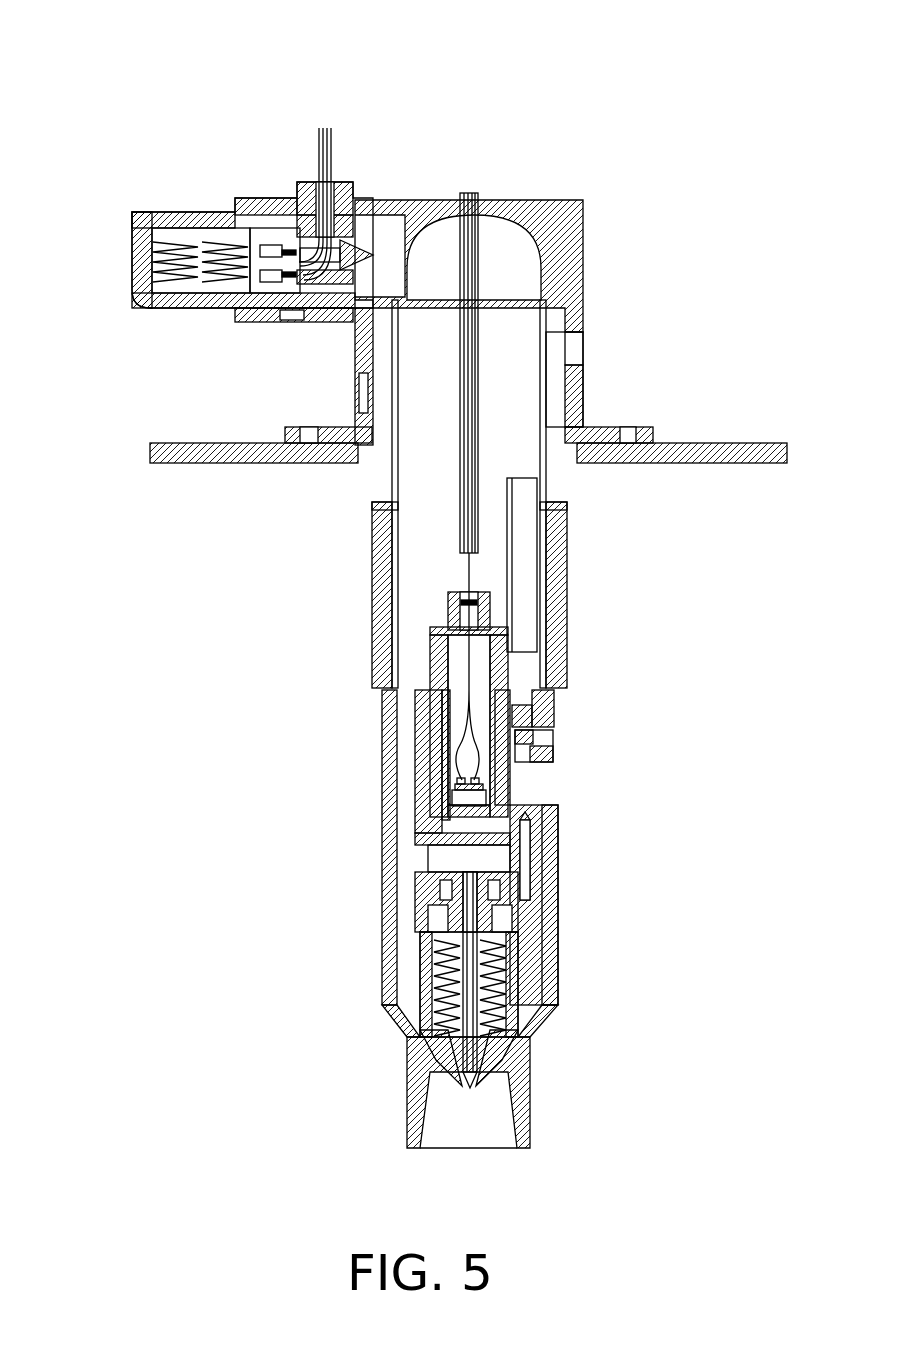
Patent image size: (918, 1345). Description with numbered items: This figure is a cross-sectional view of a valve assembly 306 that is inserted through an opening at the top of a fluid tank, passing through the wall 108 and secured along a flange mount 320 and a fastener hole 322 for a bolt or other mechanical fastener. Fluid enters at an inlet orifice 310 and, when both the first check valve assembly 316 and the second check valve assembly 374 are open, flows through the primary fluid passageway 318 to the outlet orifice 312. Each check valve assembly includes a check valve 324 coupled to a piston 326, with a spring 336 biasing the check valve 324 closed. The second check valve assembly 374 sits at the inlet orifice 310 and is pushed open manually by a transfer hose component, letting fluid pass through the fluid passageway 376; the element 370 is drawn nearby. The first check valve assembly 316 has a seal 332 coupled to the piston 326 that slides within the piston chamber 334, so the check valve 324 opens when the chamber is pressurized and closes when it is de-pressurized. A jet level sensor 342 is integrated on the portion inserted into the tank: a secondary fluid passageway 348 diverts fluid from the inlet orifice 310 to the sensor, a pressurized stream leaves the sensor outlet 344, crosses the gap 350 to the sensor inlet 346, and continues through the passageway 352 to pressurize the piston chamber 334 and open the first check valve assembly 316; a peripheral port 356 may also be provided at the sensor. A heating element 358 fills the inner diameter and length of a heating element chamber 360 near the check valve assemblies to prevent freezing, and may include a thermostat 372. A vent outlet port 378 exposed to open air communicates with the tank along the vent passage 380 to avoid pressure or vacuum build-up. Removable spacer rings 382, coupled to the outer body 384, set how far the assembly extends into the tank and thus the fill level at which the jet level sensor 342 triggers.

The valve assembly 306 is at (745, 100).
The inlet orifice 310 is at (95, 263).
The second check valve assembly 374 is at (205, 218).
The check valve 324 is at (128, 290).
The piston 326 is at (205, 290).
The spring 336 is at (255, 217).
The heating element chamber 360 is at (272, 290).
The fluid passageway 376 is at (300, 300).
The heating element 358 is at (330, 185).
The valve seat wedge 370 is at (372, 250).
The primary fluid passageway 318 is at (505, 245).
The vent passage 380 is at (553, 448).
The vent outlet port 378 is at (583, 340).
The flange mount 320 is at (575, 343).
The fastener hole 322 is at (630, 430).
The wall 108 is at (720, 448).
The spacer rings 382 is at (385, 600).
The outer body 384 is at (566, 565).
The secondary fluid passageway 348 is at (530, 603).
The peripheral port 356 is at (535, 725).
The sensor outlet 344 is at (552, 752).
The gap 350 is at (565, 772).
The jet level sensor 342 is at (685, 785).
The thermostat 372 is at (448, 800).
The sensor inlet 346 is at (520, 805).
The seal 332 is at (428, 880).
The passageway 352 is at (556, 865).
The piston chamber 334 is at (556, 893).
The first check valve assembly 316 is at (530, 968).
The outlet orifice 312 is at (500, 1172).